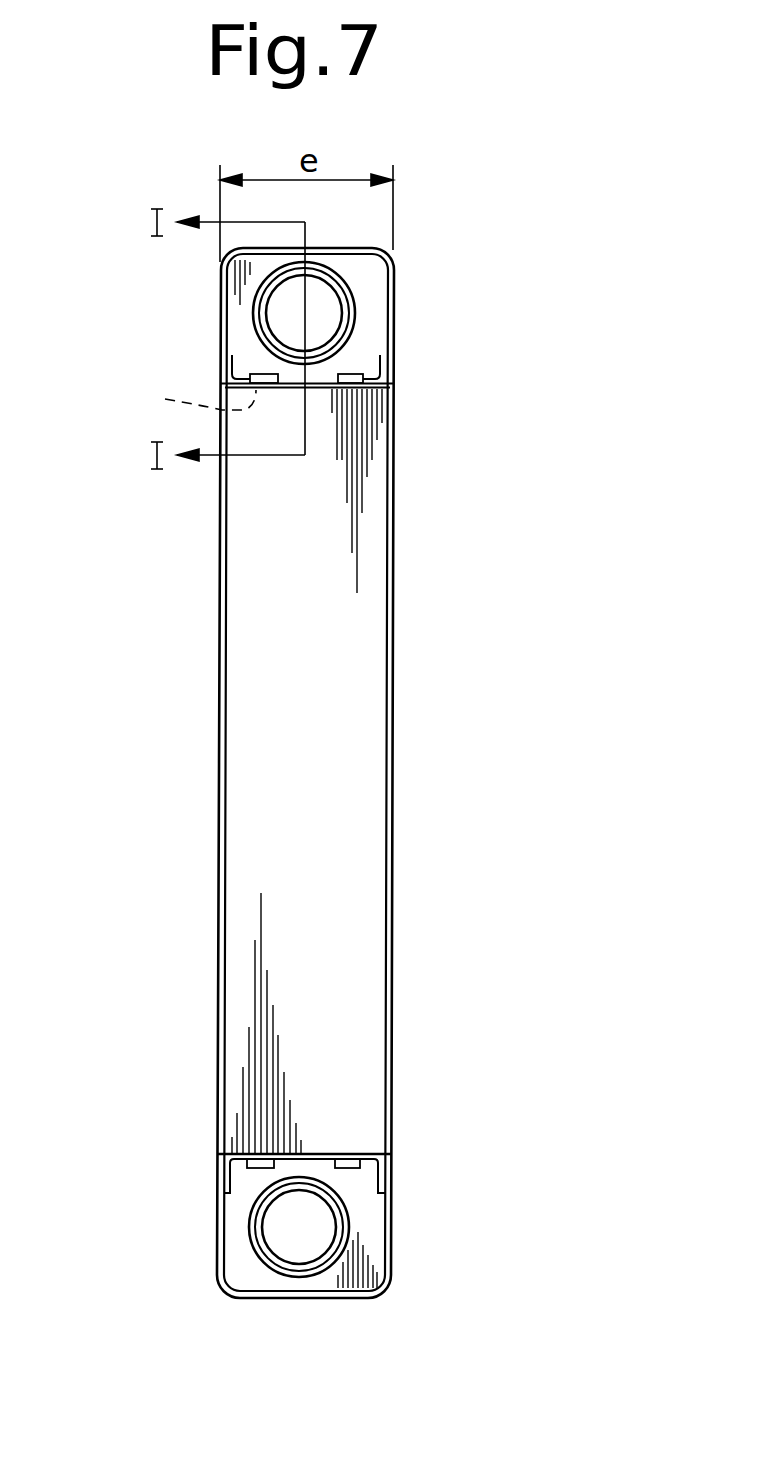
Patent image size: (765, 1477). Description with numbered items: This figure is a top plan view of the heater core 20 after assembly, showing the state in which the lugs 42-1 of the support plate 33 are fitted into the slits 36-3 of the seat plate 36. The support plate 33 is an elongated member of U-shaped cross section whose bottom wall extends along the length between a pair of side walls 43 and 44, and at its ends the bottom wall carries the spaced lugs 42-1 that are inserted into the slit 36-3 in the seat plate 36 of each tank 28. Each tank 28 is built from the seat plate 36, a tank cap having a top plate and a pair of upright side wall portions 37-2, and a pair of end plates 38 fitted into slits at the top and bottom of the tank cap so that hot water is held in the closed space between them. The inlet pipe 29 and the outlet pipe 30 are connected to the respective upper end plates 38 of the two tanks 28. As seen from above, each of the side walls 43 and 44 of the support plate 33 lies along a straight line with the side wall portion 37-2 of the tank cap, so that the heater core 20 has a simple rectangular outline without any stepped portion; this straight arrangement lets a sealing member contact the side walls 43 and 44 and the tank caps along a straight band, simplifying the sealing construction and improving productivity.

The heater core 20 is at (420, 633).
The tank 28 is at (372, 252).
The inlet pipe 29 is at (352, 284).
The outlet pipe 30 is at (347, 1207).
The support plate 33 is at (393, 745).
The seat plate 36 is at (372, 392).
The slit 36-3 is at (164, 403).
The side wall portion 37-2 is at (221, 300).
The end plate 38 is at (372, 327).
The lug 42-1 is at (268, 372).
The side wall 43 is at (392, 803).
The side wall 44 is at (218, 806).